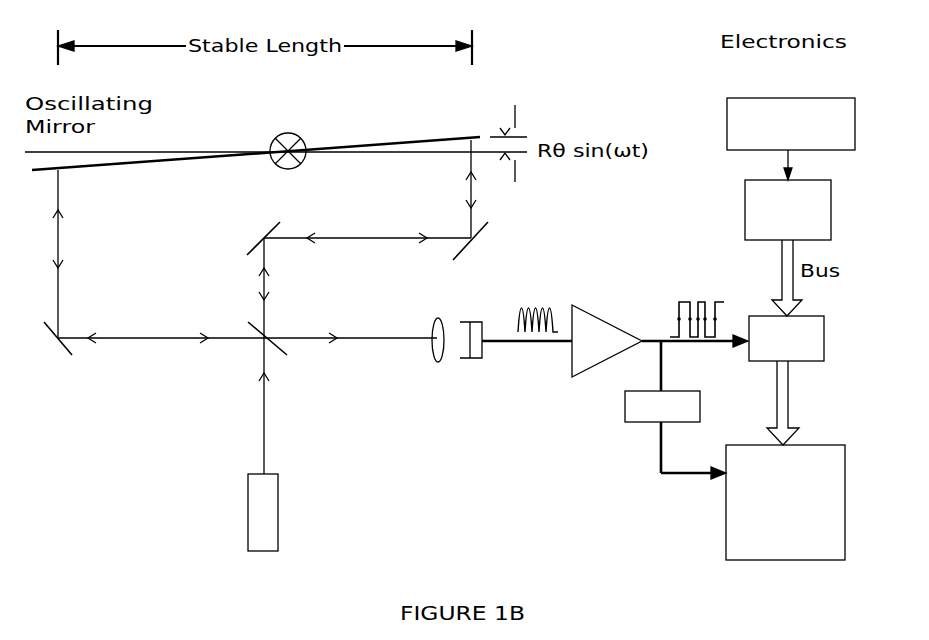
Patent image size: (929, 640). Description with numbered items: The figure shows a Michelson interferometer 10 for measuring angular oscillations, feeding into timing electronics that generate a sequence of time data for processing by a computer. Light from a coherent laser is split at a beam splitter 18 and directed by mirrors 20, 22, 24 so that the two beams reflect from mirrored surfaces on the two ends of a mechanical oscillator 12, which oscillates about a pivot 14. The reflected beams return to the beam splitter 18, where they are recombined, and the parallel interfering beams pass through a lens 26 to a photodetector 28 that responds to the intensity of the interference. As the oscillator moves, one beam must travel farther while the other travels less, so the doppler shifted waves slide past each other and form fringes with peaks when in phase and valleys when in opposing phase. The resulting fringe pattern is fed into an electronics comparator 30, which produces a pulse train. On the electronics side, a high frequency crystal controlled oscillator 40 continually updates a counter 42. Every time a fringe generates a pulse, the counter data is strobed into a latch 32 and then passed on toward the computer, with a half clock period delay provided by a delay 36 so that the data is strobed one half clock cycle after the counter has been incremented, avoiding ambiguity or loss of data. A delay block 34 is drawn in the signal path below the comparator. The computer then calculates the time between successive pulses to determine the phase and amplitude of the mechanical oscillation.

The interferometer 10 is at (243, 520).
The mechanical oscillator 12 is at (370, 138).
The pivot 14 is at (300, 128).
The beam splitter 18 is at (283, 357).
The mirror 20 is at (243, 243).
The mirror 22 is at (497, 240).
The mirror 24 is at (62, 352).
The lens 26 is at (428, 353).
The photodetector 28 is at (478, 313).
The electronics comparator 30 is at (572, 380).
The latch 32 is at (833, 330).
The delay 34 is at (620, 420).
The delay 36 is at (848, 456).
The high frequency crystal controlled oscillator 40 is at (838, 96).
The counter 42 is at (833, 198).